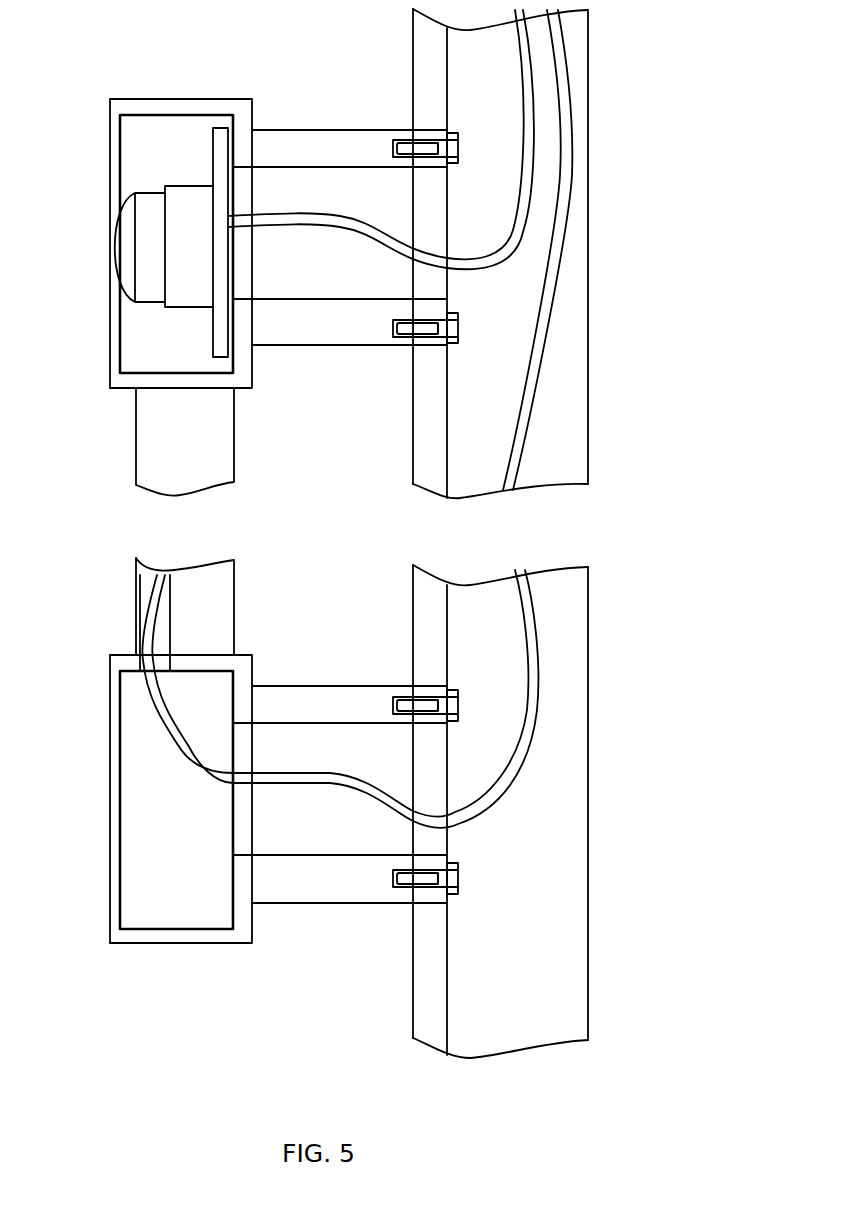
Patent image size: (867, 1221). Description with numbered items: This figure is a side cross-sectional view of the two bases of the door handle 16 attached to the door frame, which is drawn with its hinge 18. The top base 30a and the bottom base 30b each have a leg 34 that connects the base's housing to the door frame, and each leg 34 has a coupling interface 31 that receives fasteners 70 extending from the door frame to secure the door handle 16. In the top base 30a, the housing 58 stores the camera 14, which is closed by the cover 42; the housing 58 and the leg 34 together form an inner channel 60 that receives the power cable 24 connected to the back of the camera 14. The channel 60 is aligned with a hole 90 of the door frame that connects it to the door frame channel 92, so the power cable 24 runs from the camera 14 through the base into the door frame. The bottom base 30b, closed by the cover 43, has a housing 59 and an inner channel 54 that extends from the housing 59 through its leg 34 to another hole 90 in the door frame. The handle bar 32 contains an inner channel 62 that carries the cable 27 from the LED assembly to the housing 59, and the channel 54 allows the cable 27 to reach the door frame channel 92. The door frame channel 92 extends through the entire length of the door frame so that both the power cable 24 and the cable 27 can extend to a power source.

The camera 14 is at (118, 252).
The door handle 16 is at (137, 83).
The hinge 18 is at (585, 212).
The power cable 24 is at (533, 108).
The cable 27 is at (532, 372).
The top base 30a is at (170, 109).
The bottom base 30b is at (185, 935).
The coupling interface 31 is at (410, 343).
The handle bar 32 is at (142, 419).
The leg 34 is at (362, 341).
The cover 42 is at (115, 358).
The cover 43 is at (115, 795).
The channel 54 is at (337, 747).
The housing 58 is at (140, 137).
The housing 59 is at (132, 694).
The channel 60 is at (350, 181).
The inner channel 62 is at (148, 583).
The fasteners 70 is at (455, 878).
The hole 90 is at (422, 228).
The door frame channel 92 is at (463, 73).